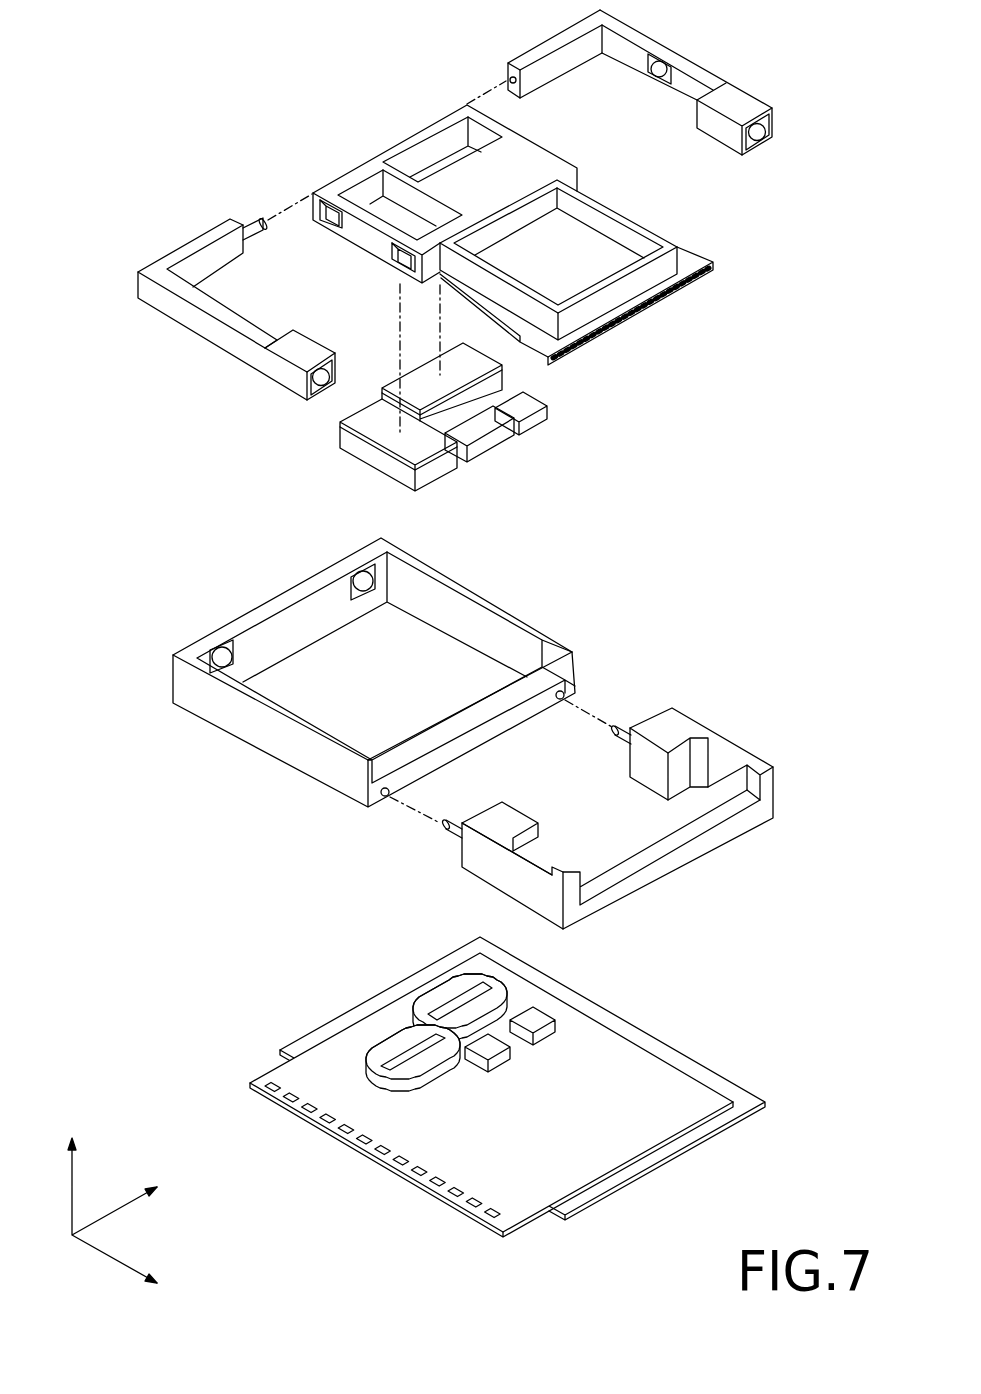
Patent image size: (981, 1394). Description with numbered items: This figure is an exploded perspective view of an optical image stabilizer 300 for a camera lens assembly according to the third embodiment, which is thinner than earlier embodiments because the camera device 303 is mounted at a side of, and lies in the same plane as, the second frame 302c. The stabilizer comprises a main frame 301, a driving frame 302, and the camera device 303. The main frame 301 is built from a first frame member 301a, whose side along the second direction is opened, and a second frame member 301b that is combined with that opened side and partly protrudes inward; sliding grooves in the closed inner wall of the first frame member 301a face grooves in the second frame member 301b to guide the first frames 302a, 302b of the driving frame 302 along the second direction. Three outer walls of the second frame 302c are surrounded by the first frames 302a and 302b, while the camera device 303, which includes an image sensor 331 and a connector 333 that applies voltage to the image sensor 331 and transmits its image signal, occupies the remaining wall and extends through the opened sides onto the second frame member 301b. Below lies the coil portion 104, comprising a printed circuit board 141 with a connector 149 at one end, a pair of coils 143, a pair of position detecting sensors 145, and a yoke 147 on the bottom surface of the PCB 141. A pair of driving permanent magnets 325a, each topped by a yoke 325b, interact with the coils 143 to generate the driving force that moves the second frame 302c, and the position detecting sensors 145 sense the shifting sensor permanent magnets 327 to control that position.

The optical image stabilizer 300 is at (232, 16).
The driving frame 302 is at (300, 157).
The first frame 302a is at (138, 286).
The first frame 302b is at (738, 100).
The second frame 302c is at (432, 112).
The camera device 303 is at (667, 230).
The image sensor 331 is at (592, 233).
The connector 333 is at (703, 282).
The driving permanent magnet 325a is at (365, 452).
The yoke 325b is at (353, 415).
The sensor permanent magnet 327 is at (502, 435).
The main frame 301 is at (262, 767).
The first frame member 301a is at (177, 685).
The second frame member 301b is at (770, 793).
The coil portion 104 is at (250, 1115).
The printed circuit board 141 is at (530, 1190).
The coils 143 is at (380, 1037).
The position detecting sensors 145 is at (535, 1015).
The yoke 147 is at (707, 1125).
The connector 149 is at (360, 1147).